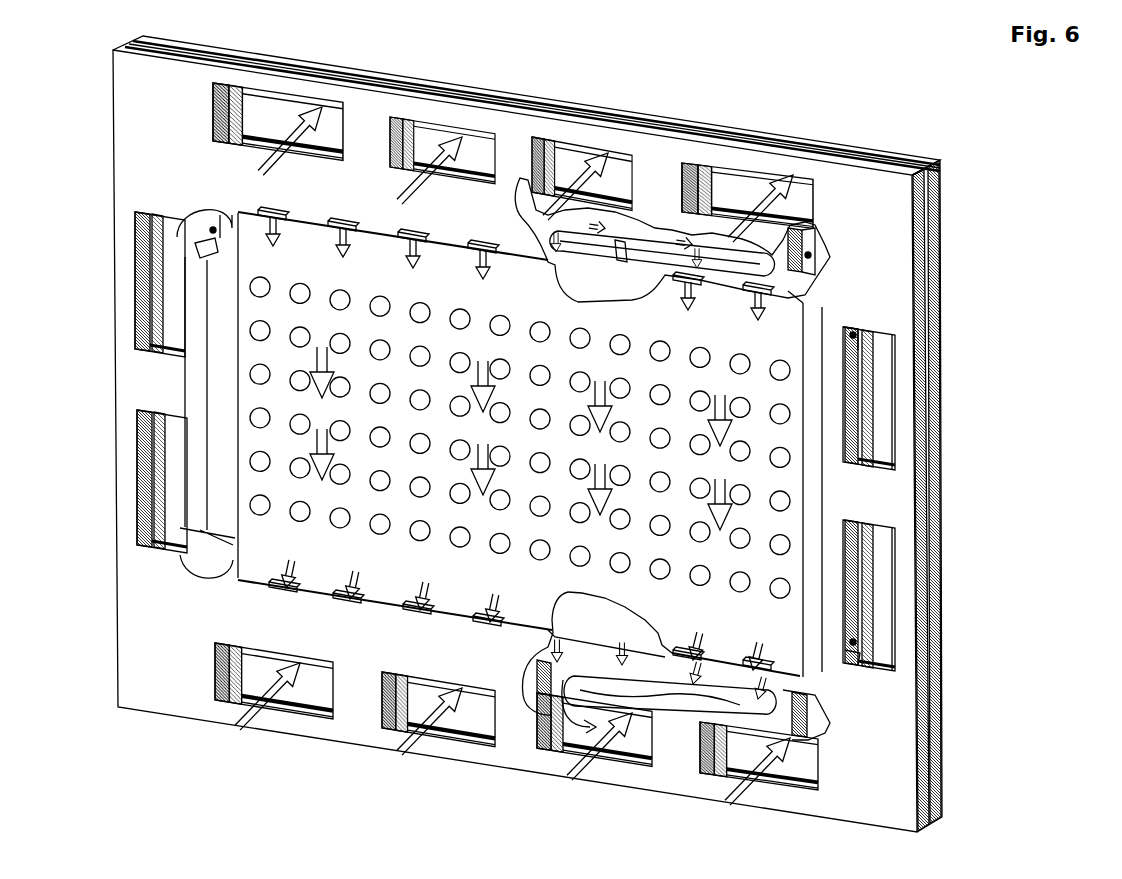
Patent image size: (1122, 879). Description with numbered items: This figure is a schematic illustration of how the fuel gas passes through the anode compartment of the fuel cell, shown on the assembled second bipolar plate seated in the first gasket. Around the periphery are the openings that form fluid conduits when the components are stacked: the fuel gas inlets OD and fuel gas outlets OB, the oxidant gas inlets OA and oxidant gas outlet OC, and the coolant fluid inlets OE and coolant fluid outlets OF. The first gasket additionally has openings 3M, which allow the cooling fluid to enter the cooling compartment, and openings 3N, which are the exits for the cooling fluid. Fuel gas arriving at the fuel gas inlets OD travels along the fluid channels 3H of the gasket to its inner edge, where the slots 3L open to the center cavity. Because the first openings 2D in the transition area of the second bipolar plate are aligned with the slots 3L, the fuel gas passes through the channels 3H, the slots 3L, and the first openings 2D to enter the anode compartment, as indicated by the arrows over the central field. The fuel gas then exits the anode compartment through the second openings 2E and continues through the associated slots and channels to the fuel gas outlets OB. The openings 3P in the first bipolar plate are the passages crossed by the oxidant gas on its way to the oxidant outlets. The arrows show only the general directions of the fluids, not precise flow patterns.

The oxidant gas outlet OC is at (325, 124).
The fuel gas inlets OD is at (573, 163).
The oxidant gas inlets OA is at (313, 688).
The fuel gas outlets OB is at (570, 737).
The coolant fluid inlets OE is at (180, 477).
The coolant fluid outlets OF is at (180, 287).
The fluid channels 3H is at (618, 233).
The slots 3L is at (623, 250).
The openings 3N is at (213, 230).
The openings 3M is at (210, 540).
The openings 3P is at (808, 255).
The first openings 2D is at (795, 305).
The second openings 2E is at (767, 675).